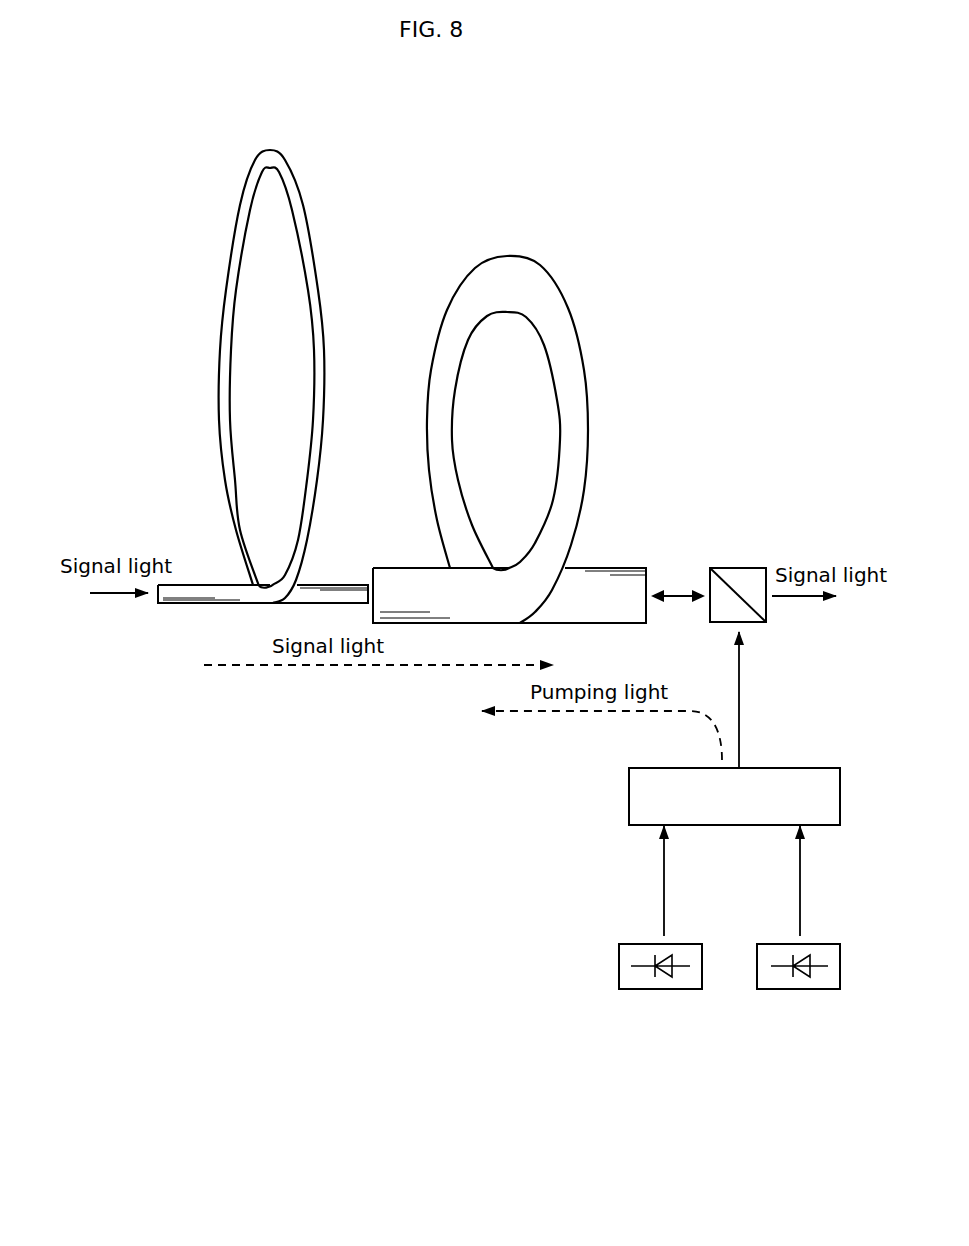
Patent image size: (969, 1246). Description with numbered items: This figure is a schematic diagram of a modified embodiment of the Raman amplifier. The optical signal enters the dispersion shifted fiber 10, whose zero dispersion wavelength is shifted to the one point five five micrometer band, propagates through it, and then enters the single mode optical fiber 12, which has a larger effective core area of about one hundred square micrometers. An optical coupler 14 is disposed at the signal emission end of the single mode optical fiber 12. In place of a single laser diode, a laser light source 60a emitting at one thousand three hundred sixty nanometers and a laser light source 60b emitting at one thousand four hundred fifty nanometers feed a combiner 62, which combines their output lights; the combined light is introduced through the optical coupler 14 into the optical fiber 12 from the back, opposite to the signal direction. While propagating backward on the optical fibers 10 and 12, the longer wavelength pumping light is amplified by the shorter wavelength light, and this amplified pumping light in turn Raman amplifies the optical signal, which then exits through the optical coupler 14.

The dispersion shifted fiber 10 is at (310, 257).
The single mode optical fiber 12 is at (551, 323).
The optical coupler 14 is at (738, 578).
The combiner 62 is at (643, 789).
The 1360 nm laser light source 60a is at (638, 975).
The 1450 nm laser light source 60b is at (776, 975).